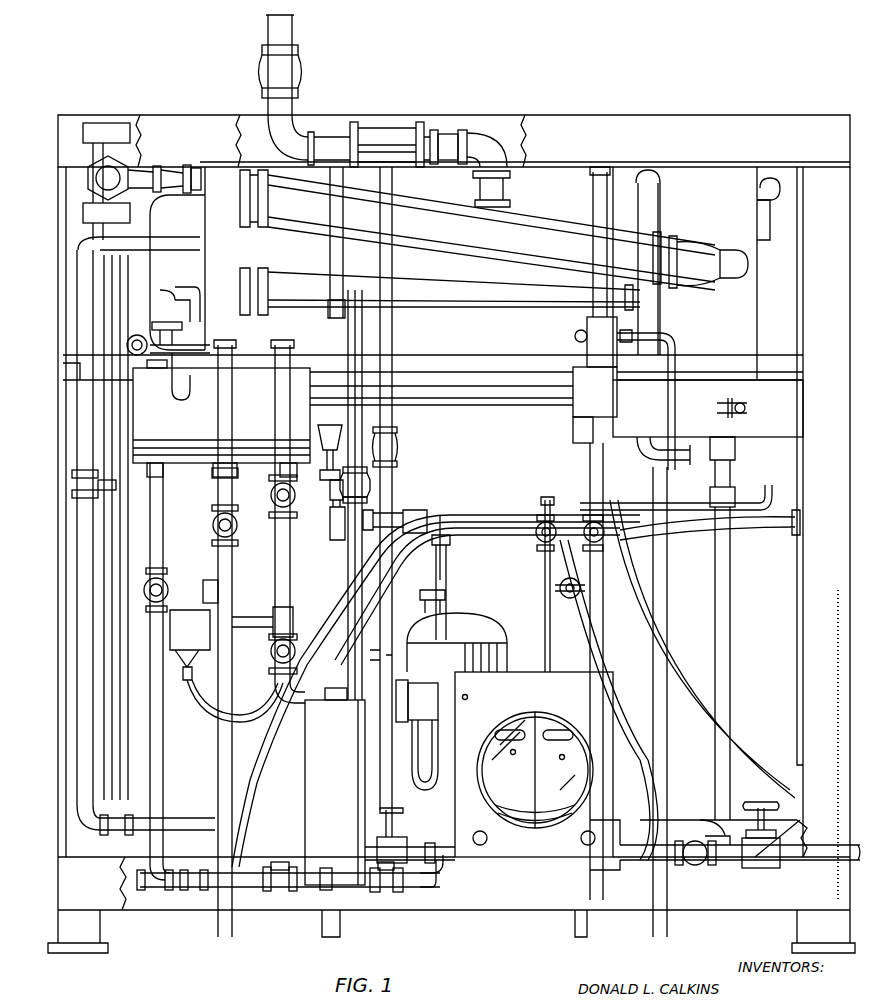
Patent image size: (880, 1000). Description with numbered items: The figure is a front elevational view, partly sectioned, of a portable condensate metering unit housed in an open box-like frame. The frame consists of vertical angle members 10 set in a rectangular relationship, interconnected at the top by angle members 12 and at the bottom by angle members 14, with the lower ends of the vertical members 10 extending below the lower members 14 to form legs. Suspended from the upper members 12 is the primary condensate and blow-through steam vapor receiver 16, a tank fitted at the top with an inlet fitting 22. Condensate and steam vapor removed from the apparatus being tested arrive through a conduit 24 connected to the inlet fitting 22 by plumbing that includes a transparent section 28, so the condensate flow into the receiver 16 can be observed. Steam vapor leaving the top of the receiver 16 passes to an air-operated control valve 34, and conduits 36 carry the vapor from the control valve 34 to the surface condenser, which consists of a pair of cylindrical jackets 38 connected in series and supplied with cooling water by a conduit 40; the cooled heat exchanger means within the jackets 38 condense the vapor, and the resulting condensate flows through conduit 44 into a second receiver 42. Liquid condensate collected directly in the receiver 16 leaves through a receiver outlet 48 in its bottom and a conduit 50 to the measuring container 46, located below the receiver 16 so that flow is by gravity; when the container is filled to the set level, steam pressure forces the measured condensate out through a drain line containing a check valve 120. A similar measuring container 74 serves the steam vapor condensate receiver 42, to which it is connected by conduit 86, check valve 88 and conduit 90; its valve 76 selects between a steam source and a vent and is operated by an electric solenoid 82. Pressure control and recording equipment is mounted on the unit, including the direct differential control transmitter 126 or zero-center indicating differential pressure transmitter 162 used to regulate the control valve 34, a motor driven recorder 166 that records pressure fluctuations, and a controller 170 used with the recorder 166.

The vertical angle members 10 is at (832, 598).
The upper angle members 12 is at (684, 127).
The lower angle members 14 is at (498, 905).
The primary condensate and blow-through steam vapor receiver 16 is at (716, 329).
The inlet fitting 22 is at (513, 204).
The conduit 24 is at (272, 40).
The transparent section 28 is at (372, 132).
The air-operated control valve 34 is at (88, 158).
The conduits 36 is at (160, 182).
The cylindrical jackets 38 is at (478, 233).
The conduit 40 is at (192, 244).
The receiver 42 is at (270, 465).
The conduit 44 is at (190, 343).
The measuring container 46 is at (465, 630).
The receiver outlet 48 is at (318, 430).
The conduit 50 is at (328, 503).
The condensate measuring container 74 is at (313, 783).
The valve 76 is at (388, 686).
The electric solenoid 82 is at (425, 690).
The conduit 86 is at (158, 748).
The check valve 88 is at (283, 888).
The conduit 90 is at (347, 850).
The check valve 120 is at (386, 890).
The direct differential control transmitter 126 is at (534, 795).
The zero-center indicating differential pressure transmitter 162 is at (535, 848).
The motor driven recorder 166 is at (690, 413).
The controller 170 is at (578, 345).